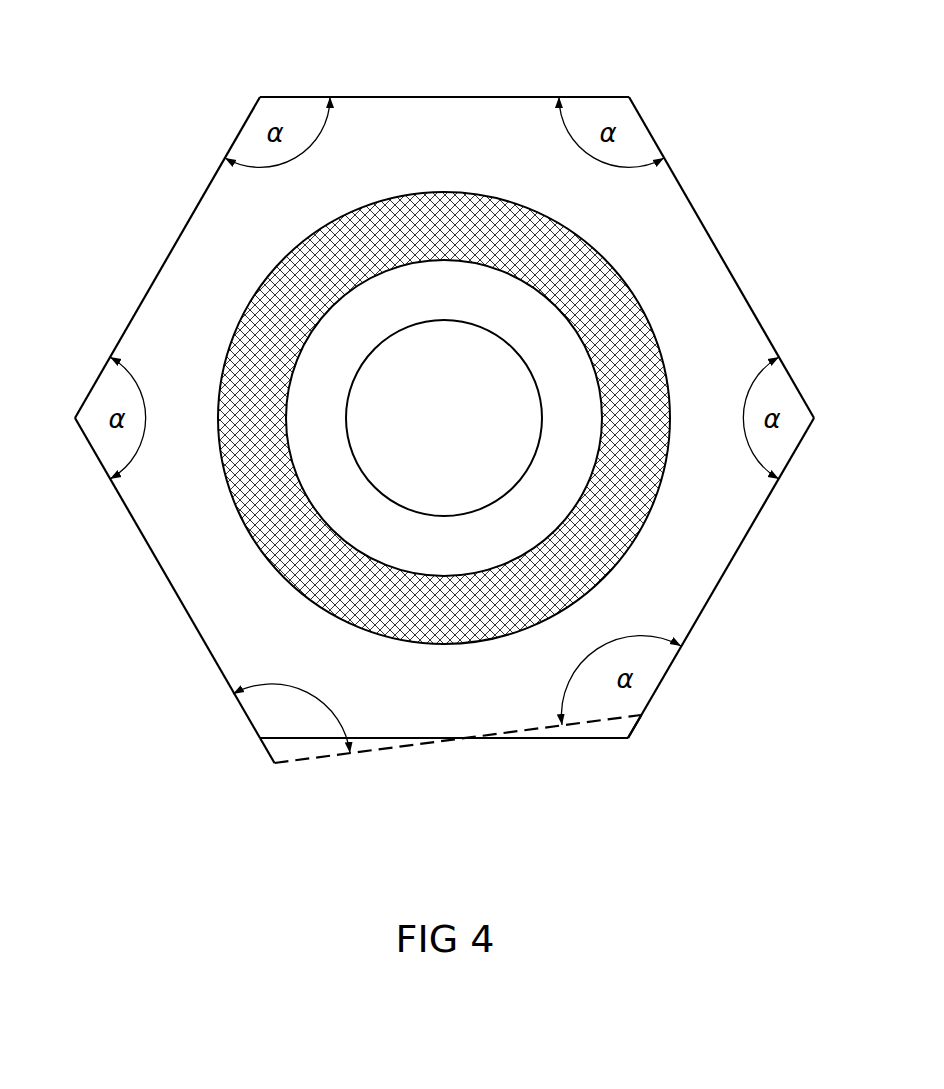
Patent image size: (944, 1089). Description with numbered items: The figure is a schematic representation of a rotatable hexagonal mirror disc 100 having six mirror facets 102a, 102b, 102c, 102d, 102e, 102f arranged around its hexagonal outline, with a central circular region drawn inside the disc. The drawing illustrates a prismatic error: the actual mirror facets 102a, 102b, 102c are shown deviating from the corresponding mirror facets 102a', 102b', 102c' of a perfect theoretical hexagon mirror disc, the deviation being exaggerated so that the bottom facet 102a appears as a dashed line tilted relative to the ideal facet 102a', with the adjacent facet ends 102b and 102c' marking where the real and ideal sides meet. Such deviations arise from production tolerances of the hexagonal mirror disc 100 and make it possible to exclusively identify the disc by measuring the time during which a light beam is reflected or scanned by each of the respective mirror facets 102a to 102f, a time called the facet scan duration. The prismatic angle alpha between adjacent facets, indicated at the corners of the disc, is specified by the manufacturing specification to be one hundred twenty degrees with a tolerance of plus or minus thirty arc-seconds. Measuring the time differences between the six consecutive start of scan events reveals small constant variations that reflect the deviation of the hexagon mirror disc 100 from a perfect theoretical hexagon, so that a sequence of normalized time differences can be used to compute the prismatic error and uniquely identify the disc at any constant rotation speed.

The rotatable hexagonal mirror disc 100 is at (518, 122).
The mirror facet 102a is at (458, 780).
The mirror facet of perfect theoretical hexagon mirror disc 102a' is at (444, 787).
The mirror facet 102b is at (216, 770).
The mirror facet of perfect theoretical hexagon mirror disc 102b' is at (167, 578).
The mirror facet 102c is at (722, 578).
The mirror facet of perfect theoretical hexagon mirror disc 102c' is at (692, 744).
The mirror facet 102d is at (697, 213).
The mirror facet 102e is at (442, 97).
The mirror facet 102f is at (191, 213).